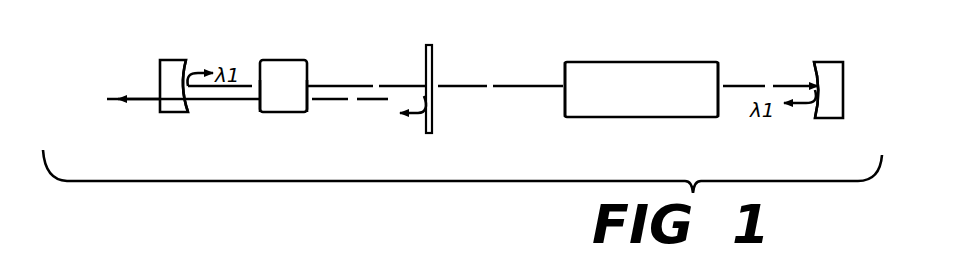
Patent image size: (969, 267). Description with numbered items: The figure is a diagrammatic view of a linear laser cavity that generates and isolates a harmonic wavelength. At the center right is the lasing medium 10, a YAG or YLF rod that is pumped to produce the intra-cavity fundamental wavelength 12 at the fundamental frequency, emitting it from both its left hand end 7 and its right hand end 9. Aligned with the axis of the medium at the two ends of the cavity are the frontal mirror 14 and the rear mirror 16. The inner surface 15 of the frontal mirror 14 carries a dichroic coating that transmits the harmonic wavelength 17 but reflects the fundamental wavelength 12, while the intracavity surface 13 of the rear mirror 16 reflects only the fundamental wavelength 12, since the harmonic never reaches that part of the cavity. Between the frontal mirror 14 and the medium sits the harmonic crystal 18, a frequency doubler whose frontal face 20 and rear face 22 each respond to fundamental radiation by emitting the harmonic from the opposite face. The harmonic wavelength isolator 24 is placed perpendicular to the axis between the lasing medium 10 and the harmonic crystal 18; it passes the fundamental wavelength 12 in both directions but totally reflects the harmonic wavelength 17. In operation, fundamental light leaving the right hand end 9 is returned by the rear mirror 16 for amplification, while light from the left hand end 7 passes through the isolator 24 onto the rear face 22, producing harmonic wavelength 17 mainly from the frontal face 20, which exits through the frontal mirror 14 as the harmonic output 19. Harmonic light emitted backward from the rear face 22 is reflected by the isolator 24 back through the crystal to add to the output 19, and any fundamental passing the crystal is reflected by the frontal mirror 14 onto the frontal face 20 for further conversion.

The left hand end of lasing medium 7 is at (577, 62).
The right hand end of lasing medium 9 is at (715, 62).
The lasing medium 10 is at (658, 62).
The fundamental wavelength 12 is at (500, 85).
The intracavity surface of rear mirror 13 is at (816, 74).
The frontal mirror 14 is at (170, 60).
The inner surface of frontal mirror 15 is at (184, 67).
The rear mirror 16 is at (827, 62).
The harmonic wavelength 17 is at (230, 101).
The harmonic crystal 18 is at (287, 60).
The λ2 output 19 is at (140, 97).
The frontal face of harmonic crystal 20 is at (258, 112).
The rear face of harmonic crystal 22 is at (308, 112).
The harmonic wavelength isolator 24 is at (427, 48).